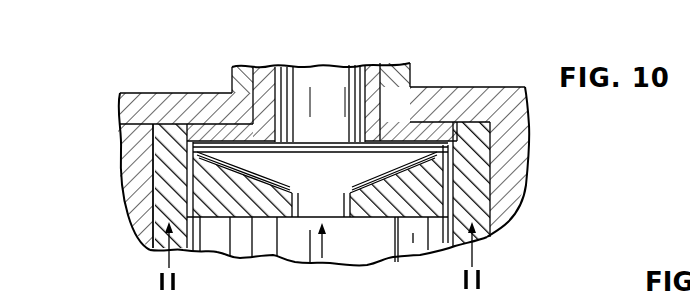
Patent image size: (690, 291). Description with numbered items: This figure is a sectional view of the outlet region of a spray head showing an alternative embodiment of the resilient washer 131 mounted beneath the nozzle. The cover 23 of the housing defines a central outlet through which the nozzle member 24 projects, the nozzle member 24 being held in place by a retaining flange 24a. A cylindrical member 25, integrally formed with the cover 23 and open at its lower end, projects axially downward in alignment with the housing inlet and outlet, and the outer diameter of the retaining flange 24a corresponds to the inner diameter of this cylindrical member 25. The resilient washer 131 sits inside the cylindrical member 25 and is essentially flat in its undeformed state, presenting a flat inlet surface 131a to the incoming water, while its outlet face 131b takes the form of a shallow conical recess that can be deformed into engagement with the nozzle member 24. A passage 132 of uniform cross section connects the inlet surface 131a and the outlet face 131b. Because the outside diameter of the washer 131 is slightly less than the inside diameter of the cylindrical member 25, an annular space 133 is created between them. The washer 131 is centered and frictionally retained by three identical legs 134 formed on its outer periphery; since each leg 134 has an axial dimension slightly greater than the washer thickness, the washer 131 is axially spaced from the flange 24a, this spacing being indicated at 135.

The cover portion 23 is at (141, 93).
The nozzle member 24 is at (372, 90).
The retaining flange 24a is at (185, 136).
The cylindrical member 25 is at (160, 204).
The legs 134 is at (185, 170).
The axial spacing 135 is at (328, 142).
The annular space 133 is at (460, 150).
The resilient washer 131 is at (450, 192).
The flat inlet surface 131a is at (393, 218).
The outlet face 131b is at (373, 178).
The passage 132 is at (352, 192).